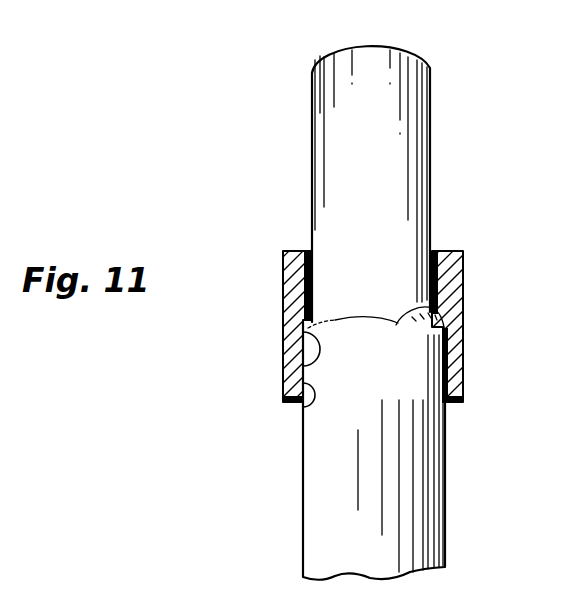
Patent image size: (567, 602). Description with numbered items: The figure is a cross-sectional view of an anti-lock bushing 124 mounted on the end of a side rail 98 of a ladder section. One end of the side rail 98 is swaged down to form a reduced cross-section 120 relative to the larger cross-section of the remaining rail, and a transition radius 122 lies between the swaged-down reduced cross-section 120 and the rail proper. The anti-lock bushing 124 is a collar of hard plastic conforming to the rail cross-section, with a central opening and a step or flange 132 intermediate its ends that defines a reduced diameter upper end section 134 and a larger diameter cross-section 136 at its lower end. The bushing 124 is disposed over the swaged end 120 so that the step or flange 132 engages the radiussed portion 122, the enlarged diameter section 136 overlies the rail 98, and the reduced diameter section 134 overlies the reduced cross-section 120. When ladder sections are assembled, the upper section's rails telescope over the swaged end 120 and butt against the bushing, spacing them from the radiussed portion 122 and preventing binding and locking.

The reduced cross-section 120 is at (430, 196).
The side rail 98 is at (447, 425).
The anti-lock bushing 124 is at (293, 251).
The transition radius 122 is at (450, 314).
The reduced diameter upper end section 134 is at (308, 278).
The step or flange 132 is at (300, 365).
The larger diameter cross-section 136 is at (305, 403).